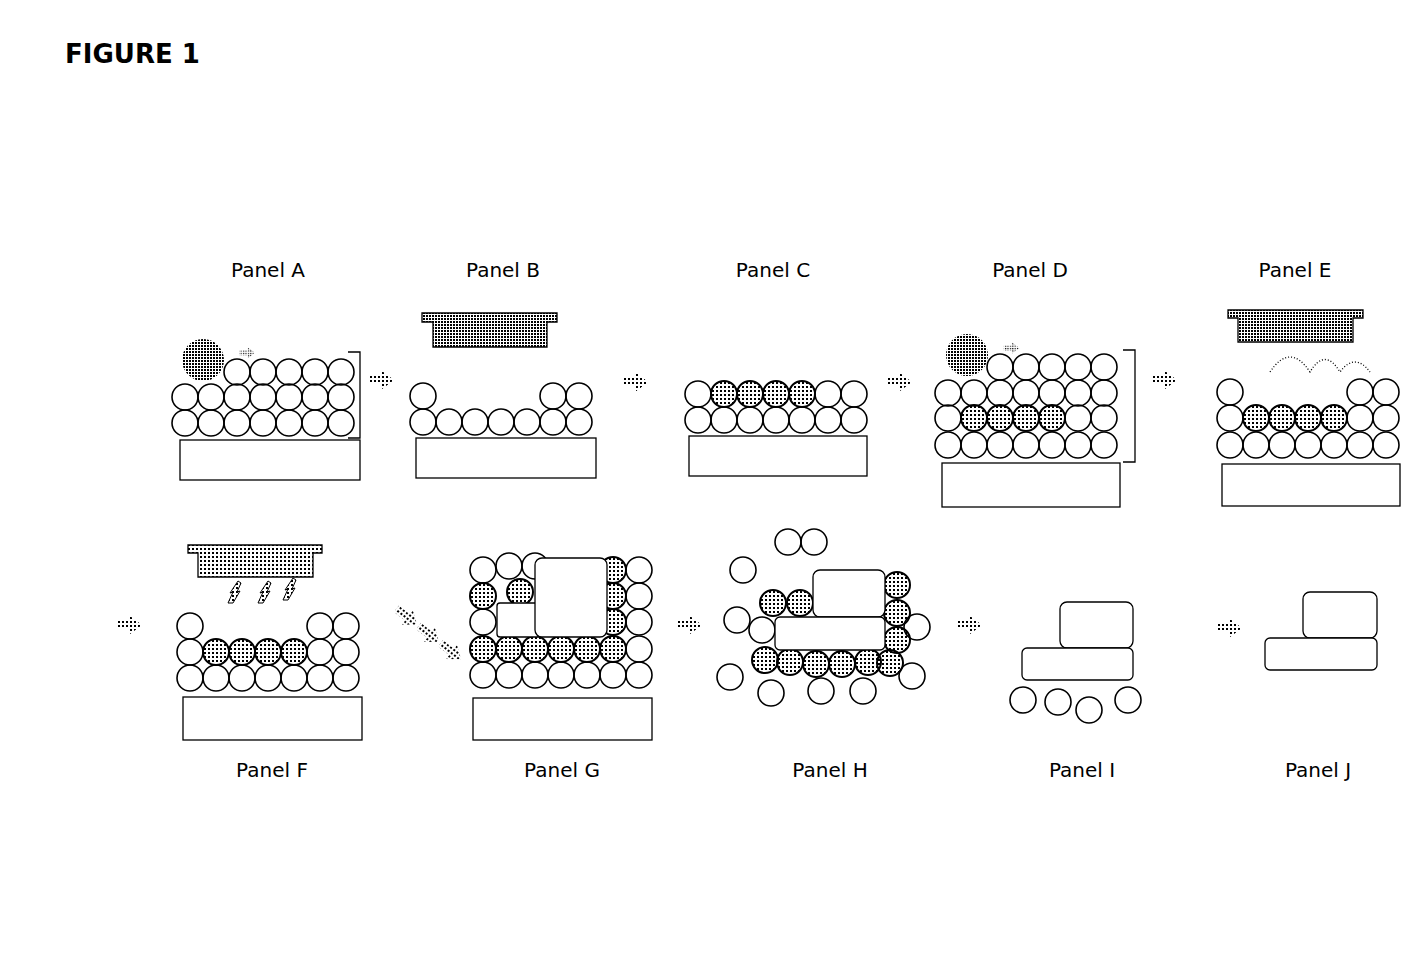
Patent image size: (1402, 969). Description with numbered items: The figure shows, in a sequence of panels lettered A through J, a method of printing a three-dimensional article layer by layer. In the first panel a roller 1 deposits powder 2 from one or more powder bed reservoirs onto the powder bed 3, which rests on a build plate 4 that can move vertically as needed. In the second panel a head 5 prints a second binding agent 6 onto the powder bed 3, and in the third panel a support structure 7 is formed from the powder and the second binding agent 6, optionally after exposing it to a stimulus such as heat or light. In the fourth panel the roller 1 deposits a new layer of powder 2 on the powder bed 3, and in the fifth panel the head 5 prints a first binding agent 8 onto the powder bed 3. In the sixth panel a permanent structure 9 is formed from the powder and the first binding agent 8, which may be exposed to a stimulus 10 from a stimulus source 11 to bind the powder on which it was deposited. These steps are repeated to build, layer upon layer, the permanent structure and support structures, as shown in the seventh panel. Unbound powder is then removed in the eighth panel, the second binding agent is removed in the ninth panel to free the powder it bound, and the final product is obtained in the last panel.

The roller 1 is at (203, 340).
The powder 2 is at (341, 368).
The powder bed 3 is at (362, 400).
The build plate 4 is at (790, 588).
The head 5 is at (548, 318).
The second binding agent 6 is at (628, 364).
The support structure 7 is at (786, 391).
The first binding agent 8 is at (1297, 376).
The permanent structure 9 is at (218, 626).
The stimulus 10 is at (298, 596).
The stimulus source 11 is at (275, 556).